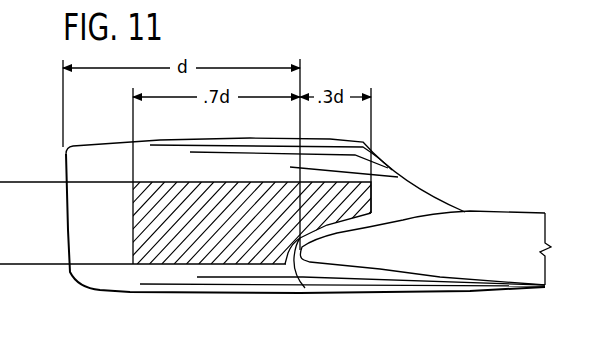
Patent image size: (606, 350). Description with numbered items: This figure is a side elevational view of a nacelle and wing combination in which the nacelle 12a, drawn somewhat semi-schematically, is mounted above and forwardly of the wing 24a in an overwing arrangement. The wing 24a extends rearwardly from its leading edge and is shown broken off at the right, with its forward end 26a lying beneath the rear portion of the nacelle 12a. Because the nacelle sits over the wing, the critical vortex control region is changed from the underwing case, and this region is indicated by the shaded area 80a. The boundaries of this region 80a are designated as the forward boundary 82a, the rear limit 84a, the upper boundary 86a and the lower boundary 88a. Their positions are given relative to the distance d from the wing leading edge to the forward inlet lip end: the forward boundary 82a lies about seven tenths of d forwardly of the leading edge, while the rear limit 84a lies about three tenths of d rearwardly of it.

The nacelle 12a is at (111, 293).
The wing 24a is at (466, 212).
The front end of ski body 26a is at (305, 288).
The critical vortex control region 80a is at (242, 246).
The forward boundary 82a is at (133, 215).
The rear limit 84a is at (372, 197).
The upper region boundary 86a is at (175, 182).
The lower region boundary 88a is at (200, 265).